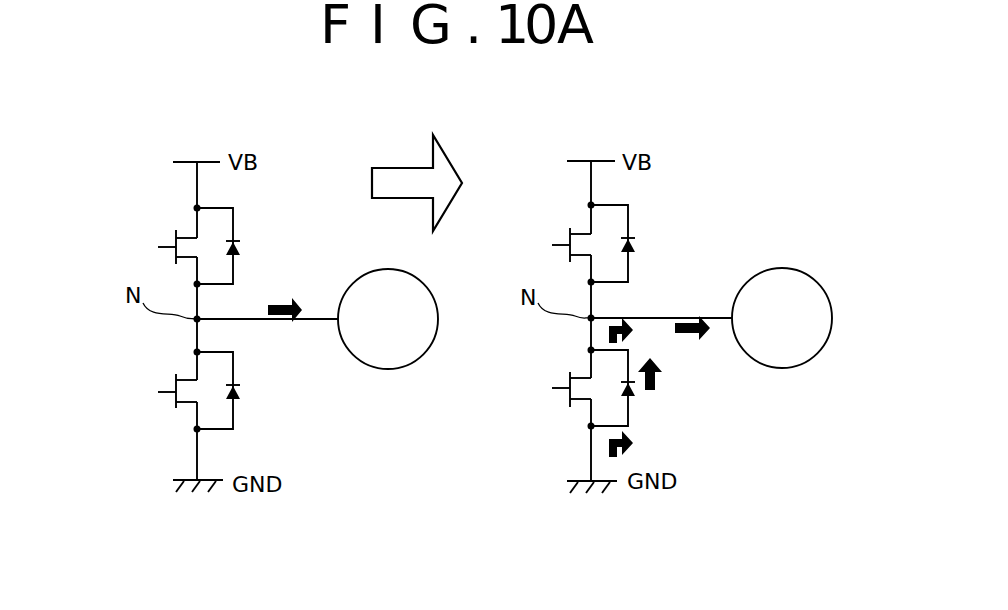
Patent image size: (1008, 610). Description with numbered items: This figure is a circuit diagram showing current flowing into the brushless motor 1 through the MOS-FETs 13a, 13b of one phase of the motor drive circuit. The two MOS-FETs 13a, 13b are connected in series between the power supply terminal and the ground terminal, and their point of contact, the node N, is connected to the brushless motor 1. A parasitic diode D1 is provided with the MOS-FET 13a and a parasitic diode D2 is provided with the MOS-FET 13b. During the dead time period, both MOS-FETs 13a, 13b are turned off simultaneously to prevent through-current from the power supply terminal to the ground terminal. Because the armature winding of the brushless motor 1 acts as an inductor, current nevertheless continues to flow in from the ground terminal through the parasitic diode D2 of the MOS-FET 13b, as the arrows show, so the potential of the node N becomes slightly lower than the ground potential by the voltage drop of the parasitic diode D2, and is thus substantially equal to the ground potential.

The MOS-FET 13a is at (172, 230).
The MOS-FET 13b is at (170, 378).
The parasitic diode D1 is at (246, 244).
The parasitic diode D2 is at (245, 384).
The brushless motor 1 is at (427, 283).